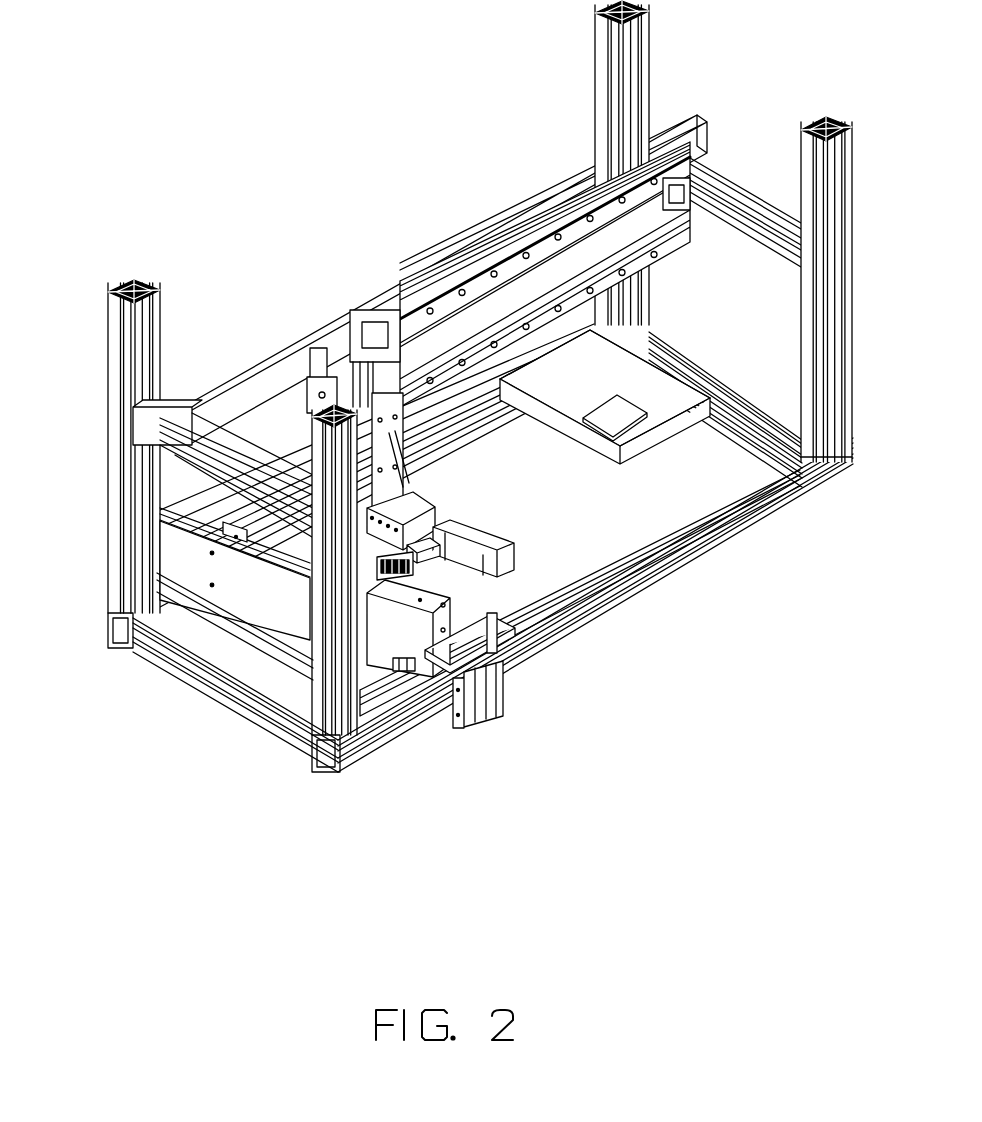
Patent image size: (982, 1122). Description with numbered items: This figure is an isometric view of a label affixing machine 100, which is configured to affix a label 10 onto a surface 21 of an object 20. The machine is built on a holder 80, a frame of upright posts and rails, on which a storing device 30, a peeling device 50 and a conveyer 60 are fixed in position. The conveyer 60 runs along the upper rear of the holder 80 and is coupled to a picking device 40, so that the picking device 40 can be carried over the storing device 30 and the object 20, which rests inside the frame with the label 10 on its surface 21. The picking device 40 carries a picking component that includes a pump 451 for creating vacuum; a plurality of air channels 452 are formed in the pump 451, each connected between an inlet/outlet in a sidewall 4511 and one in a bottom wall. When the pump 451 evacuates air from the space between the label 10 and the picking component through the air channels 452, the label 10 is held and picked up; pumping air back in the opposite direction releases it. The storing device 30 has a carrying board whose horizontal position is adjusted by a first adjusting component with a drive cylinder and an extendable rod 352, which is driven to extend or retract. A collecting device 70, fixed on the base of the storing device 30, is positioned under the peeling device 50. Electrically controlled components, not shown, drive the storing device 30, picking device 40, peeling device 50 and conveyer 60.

The label affixing machine 100 is at (384, 50).
The holder 80 is at (117, 356).
The collecting device 70 is at (214, 513).
The conveyer 60 is at (487, 297).
The surface 21 is at (596, 360).
The object 20 is at (610, 427).
The label 10 is at (650, 405).
The picking device 40 is at (417, 490).
The pump 451 is at (420, 520).
The sidewall 4511 is at (398, 577).
The air channels 452 is at (376, 562).
The peeling device 50 is at (423, 643).
The storing device 30 is at (497, 640).
The extendable rod 352 is at (403, 677).